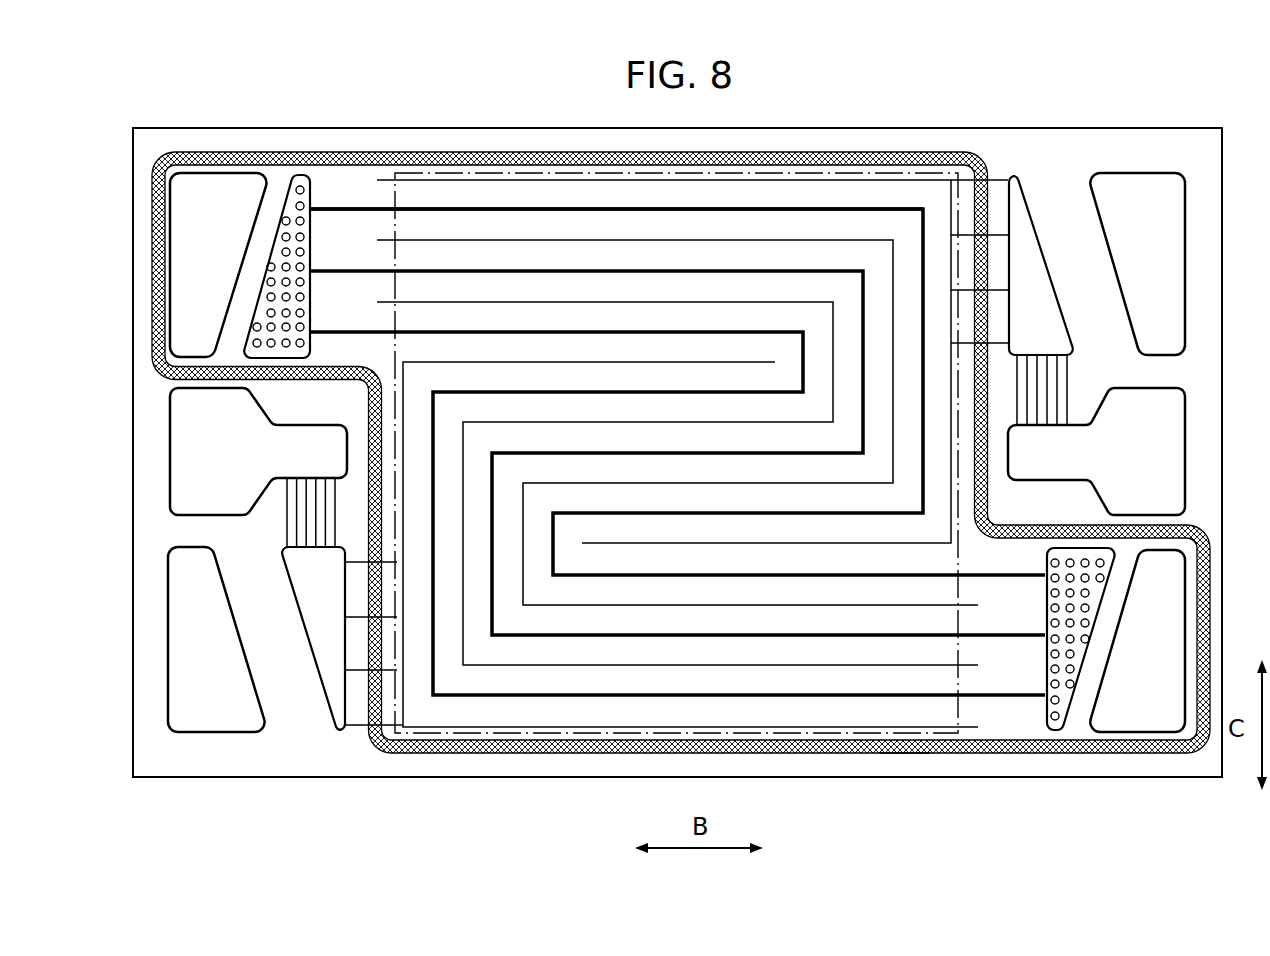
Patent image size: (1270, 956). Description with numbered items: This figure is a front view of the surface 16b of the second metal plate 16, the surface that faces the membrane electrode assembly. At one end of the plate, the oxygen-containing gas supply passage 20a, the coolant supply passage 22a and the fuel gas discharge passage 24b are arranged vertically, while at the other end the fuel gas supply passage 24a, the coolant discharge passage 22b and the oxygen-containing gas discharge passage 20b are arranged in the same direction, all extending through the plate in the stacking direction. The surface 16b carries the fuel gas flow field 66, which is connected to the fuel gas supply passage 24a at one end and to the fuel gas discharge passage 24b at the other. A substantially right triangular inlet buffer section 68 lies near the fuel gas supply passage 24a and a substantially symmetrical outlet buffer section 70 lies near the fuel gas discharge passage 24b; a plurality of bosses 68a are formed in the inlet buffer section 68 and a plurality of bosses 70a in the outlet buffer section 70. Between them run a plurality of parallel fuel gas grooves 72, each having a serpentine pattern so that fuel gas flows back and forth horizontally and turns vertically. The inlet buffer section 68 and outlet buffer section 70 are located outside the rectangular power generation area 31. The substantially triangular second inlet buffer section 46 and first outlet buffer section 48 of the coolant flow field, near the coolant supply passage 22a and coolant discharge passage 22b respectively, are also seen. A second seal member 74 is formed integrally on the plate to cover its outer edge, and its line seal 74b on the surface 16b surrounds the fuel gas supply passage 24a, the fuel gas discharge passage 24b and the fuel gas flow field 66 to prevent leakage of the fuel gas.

The second metal plate 16 is at (974, 105).
The surface 16b is at (997, 758).
The oxygen-containing gas supply passage 20a is at (1137, 264).
The oxygen-containing gas discharge passage 20b is at (216, 639).
The coolant supply passage 22a is at (1096, 451).
The coolant discharge passage 22b is at (258, 451).
The fuel gas supply passage 24a is at (218, 265).
The fuel gas discharge passage 24b is at (1137, 641).
The power generation area 31 is at (395, 298).
The second inlet buffer section 46 is at (1012, 300).
The first outlet buffer section 48 is at (342, 604).
The fuel gas flow field 66 is at (441, 203).
The inlet buffer section 68 is at (318, 200).
The bosses 68a is at (308, 266).
The outlet buffer section 70 is at (1038, 705).
The bosses 70a is at (1044, 639).
The fuel gas grooves 72 is at (683, 211).
The second seal member 74 is at (803, 760).
The line seal 74b is at (904, 756).